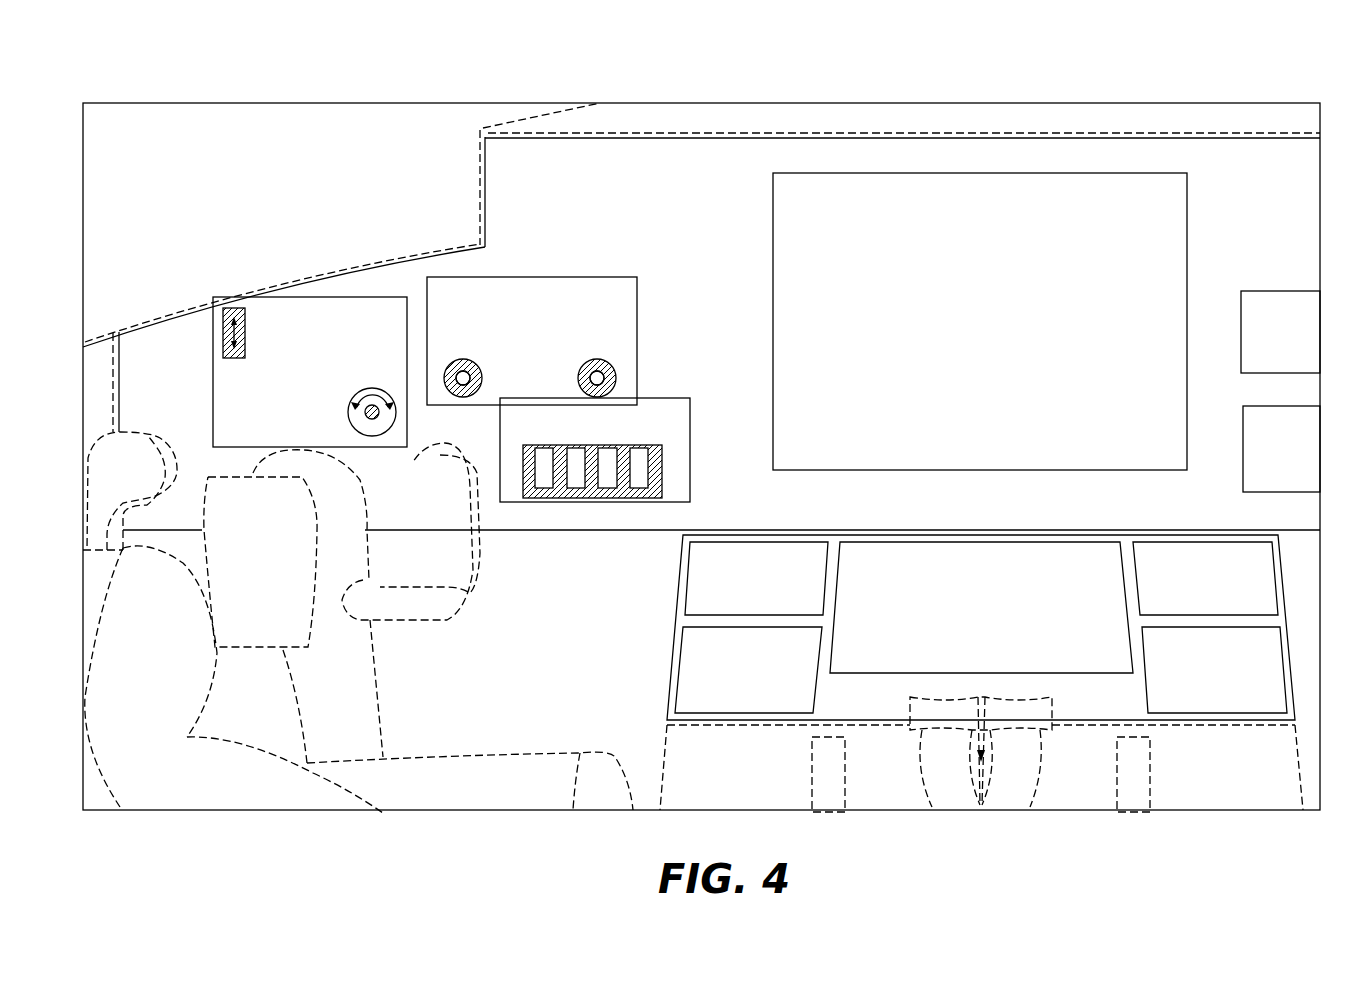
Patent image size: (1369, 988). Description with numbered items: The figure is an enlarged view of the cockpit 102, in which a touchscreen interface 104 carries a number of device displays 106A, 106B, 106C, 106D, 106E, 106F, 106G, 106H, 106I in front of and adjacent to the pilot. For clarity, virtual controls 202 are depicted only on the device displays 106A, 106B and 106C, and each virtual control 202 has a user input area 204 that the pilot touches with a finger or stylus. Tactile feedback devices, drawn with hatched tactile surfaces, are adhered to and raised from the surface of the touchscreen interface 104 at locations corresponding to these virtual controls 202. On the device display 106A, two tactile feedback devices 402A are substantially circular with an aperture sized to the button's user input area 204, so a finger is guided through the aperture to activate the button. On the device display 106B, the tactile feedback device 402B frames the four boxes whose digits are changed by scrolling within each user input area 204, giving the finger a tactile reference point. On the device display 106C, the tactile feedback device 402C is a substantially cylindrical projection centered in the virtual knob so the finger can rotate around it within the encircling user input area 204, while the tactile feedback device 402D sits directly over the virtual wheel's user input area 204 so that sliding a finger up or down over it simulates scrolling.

The cockpit 102 is at (1256, 100).
The touchscreen interface 104 is at (497, 213).
The device display 106A is at (503, 316).
The device display 106B is at (565, 428).
The device display 106C is at (281, 354).
The device display 106D is at (947, 243).
The device display 106E is at (729, 573).
The device display 106F is at (730, 658).
The device display 106G is at (940, 573).
The device display 106H is at (1175, 573).
The device display 106I is at (1193, 658).
The virtual control 202 is at (208, 330).
The user input area 204 is at (236, 358).
The tactile feedback device 402A is at (577, 378).
The tactile feedback device 402B is at (605, 492).
The tactile feedback device 402C is at (365, 416).
The tactile feedback device 402D is at (245, 311).